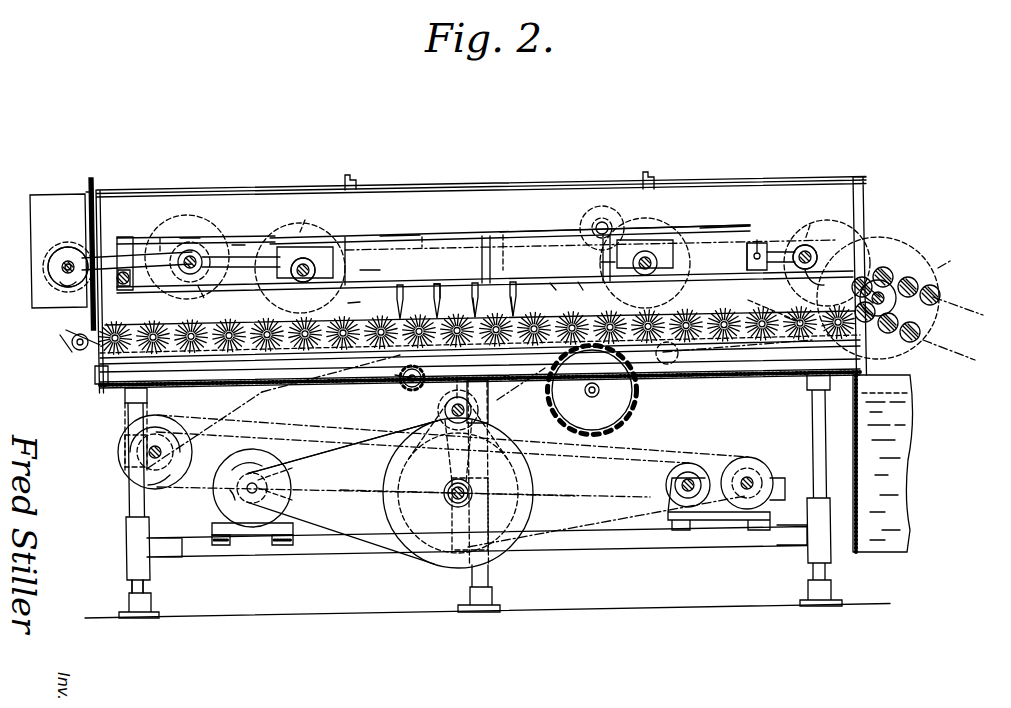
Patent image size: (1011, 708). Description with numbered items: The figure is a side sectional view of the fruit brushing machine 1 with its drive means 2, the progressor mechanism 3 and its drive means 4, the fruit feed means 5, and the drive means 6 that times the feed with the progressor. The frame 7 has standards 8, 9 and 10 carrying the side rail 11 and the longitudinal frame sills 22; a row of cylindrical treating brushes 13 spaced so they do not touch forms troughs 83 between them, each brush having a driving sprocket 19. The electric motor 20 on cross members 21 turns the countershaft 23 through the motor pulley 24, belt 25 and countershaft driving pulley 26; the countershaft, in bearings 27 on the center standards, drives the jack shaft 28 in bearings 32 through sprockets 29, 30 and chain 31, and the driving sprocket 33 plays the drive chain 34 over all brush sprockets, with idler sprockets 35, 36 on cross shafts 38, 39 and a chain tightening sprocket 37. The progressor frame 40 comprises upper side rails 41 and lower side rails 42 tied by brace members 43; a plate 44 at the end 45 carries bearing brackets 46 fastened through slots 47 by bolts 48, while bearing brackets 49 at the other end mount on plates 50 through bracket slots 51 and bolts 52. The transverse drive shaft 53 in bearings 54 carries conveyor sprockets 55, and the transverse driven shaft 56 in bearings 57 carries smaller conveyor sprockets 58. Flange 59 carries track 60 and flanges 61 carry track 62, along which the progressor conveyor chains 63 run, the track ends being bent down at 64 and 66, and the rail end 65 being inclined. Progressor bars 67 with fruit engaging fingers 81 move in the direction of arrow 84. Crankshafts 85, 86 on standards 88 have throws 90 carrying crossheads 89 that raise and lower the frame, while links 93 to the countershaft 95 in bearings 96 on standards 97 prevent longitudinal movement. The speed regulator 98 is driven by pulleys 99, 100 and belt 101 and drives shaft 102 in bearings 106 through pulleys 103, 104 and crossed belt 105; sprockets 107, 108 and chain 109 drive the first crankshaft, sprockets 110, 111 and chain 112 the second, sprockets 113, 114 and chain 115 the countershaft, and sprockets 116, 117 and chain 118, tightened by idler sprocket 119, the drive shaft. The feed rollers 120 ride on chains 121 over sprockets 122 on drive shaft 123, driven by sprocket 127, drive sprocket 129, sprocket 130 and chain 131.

The fruit brushing machine 1 is at (88, 398).
The drive means 2 is at (322, 527).
The progressor mechanism 3 is at (36, 282).
The drive means 4 is at (119, 478).
The fruit feed means 5 is at (925, 276).
The drive means 6 is at (895, 231).
The frame 7 is at (122, 539).
The standards 8 is at (815, 411).
The standards 9 is at (484, 580).
The standards 10 is at (143, 587).
The side rail 11 is at (905, 353).
The fruit treating brushes 13 is at (258, 322).
The brush driving sprocket 19 is at (765, 304).
The electric motor 20 is at (219, 503).
The cross members 21 is at (215, 536).
The longitudinal frame sills 22 is at (245, 550).
The countershaft 23 is at (448, 493).
The motor pulley 24 is at (292, 491).
The belt 25 is at (325, 452).
The countershaft driving pulley 26 is at (385, 502).
The bearings 27 is at (462, 506).
The jack shaft 28 is at (445, 410).
The sprocket 29 is at (440, 415).
The sprocket 30 is at (450, 500).
The chain 31 is at (443, 468).
The bearings 32 is at (482, 405).
The driving sprocket 33 is at (447, 381).
The drive chain 34 is at (270, 360).
The idler sprocket 35 is at (400, 386).
The idler sprocket 36 is at (637, 413).
The chain tightening sprocket 37 is at (682, 378).
The cross shaft 38 is at (403, 377).
The cross shaft 39 is at (592, 398).
The progressor frame 40 is at (455, 230).
The upper angle iron side rails 41 is at (538, 236).
The lower angle iron side rails 42 is at (485, 274).
The brace members 43 is at (347, 263).
The plate 44 is at (121, 240).
The end 45 is at (140, 231).
The bearing brackets 46 is at (92, 306).
The slots 47 is at (129, 282).
The bolts 48 is at (126, 286).
The bearing brackets 49 is at (779, 250).
The plates 50 is at (746, 262).
The bracket slots 51 is at (748, 242).
The bolts 52 is at (757, 245).
The transverse drive shaft 53 is at (67, 252).
The bearings 54 is at (66, 282).
The conveyor sprockets 55 is at (47, 257).
The transverse driven shaft 56 is at (816, 256).
The bearings 57 is at (817, 273).
The conveyor sprockets 58 is at (817, 242).
The flange 59 is at (407, 247).
The track 60 is at (394, 236).
The flanges 61 is at (553, 283).
The track 62 is at (580, 283).
The progressor conveyor chains 63 is at (422, 236).
The bent-down track ends 64 is at (102, 240).
The end 65 is at (726, 221).
The bent-down track ends 66 is at (787, 248).
The progressor bars 67 is at (441, 299).
The fruit engaging fingers 81 is at (434, 305).
The troughs 83 is at (512, 315).
The arrow 84 is at (356, 306).
The crankshaft 85 is at (312, 237).
The crankshaft 86 is at (657, 240).
The standards 88 is at (615, 290).
The crossheads 89 is at (275, 272).
The throw 90 is at (306, 282).
The links 93 is at (97, 258).
The countershaft 95 is at (202, 263).
The bearings 96 is at (192, 250).
The standards 97 is at (200, 285).
The speed regulator 98 is at (743, 456).
The pulley 99 is at (535, 500).
The pulley 100 is at (765, 462).
The belt 101 is at (598, 530).
The shaft 102 is at (163, 455).
The pulley 103 is at (188, 459).
The pulley 104 is at (690, 478).
The crossed belt 105 is at (605, 470).
The bearings 106 is at (125, 440).
The sprocket 107 is at (160, 445).
The sprocket 108 is at (290, 247).
The chain 109 is at (240, 396).
The sprocket 110 is at (373, 268).
The sprocket 111 is at (600, 268).
The chain 112 is at (503, 240).
The sprocket 113 is at (306, 222).
The sprocket 114 is at (185, 238).
The chain 115 is at (236, 243).
The sprocket 116 is at (212, 214).
The sprocket 117 is at (52, 265).
The chain 118 is at (84, 190).
The idler sprocket 119 is at (160, 250).
The rollers 120 is at (866, 279).
The chains 121 is at (951, 298).
The sprockets 122 is at (896, 305).
The drive shaft 123 is at (889, 296).
The sprocket 127 is at (597, 222).
The drive sprocket 129 is at (610, 212).
The sprocket 130 is at (952, 264).
The chain 131 is at (815, 225).